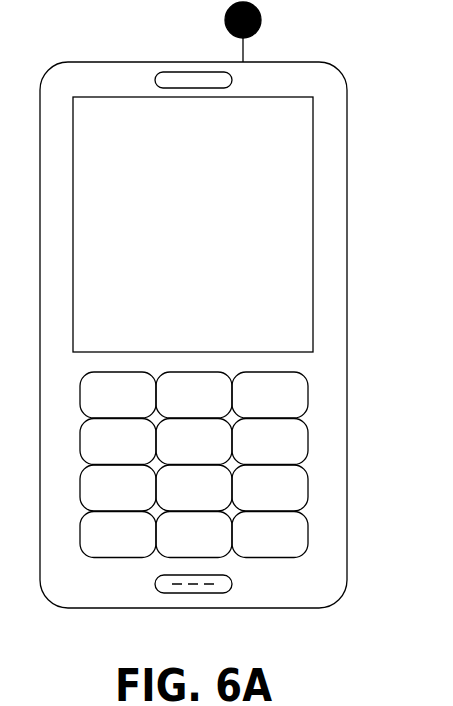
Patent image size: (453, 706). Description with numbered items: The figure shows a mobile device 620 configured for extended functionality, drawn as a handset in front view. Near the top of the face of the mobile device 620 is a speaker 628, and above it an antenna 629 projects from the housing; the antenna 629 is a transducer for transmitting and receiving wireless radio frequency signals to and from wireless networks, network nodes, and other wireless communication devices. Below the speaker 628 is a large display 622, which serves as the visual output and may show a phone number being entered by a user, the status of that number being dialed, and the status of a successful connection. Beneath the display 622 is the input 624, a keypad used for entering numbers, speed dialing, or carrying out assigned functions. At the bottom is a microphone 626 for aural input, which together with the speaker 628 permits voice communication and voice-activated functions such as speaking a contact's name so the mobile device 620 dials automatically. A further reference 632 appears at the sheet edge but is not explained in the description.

The mobile device 620 is at (193, 62).
The display 622 is at (313, 220).
The input 624 is at (307, 440).
The microphone 626 is at (170, 592).
The speaker 628 is at (193, 90).
The antenna 629 is at (258, 38).
The reference element 632 is at (452, 693).